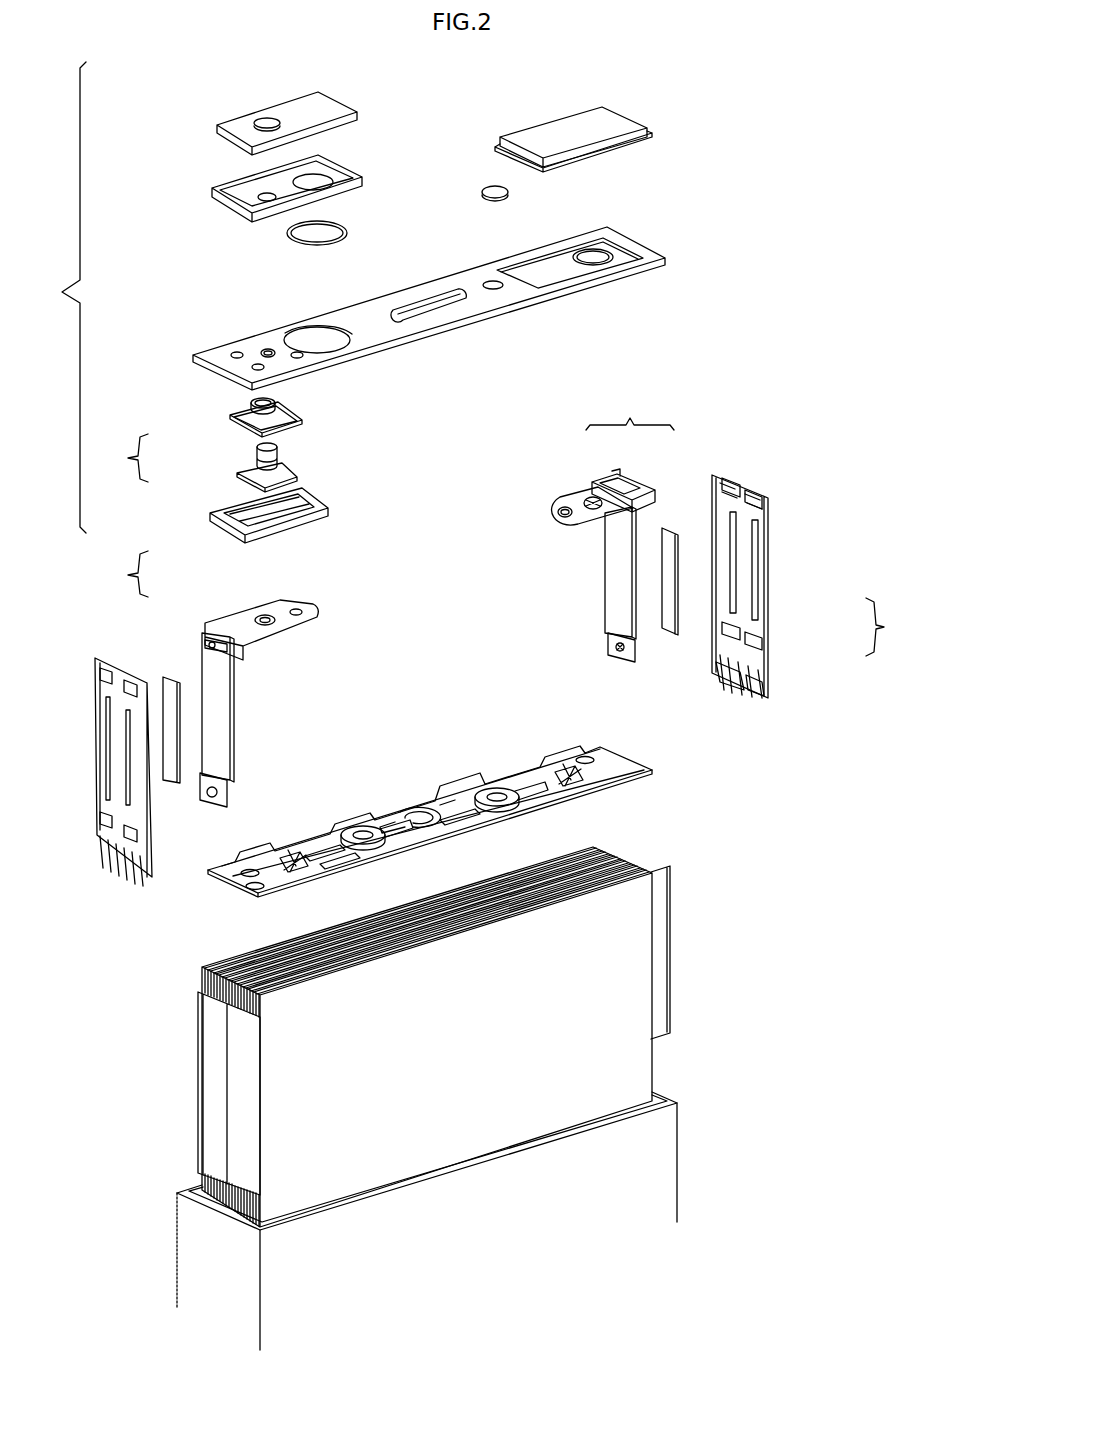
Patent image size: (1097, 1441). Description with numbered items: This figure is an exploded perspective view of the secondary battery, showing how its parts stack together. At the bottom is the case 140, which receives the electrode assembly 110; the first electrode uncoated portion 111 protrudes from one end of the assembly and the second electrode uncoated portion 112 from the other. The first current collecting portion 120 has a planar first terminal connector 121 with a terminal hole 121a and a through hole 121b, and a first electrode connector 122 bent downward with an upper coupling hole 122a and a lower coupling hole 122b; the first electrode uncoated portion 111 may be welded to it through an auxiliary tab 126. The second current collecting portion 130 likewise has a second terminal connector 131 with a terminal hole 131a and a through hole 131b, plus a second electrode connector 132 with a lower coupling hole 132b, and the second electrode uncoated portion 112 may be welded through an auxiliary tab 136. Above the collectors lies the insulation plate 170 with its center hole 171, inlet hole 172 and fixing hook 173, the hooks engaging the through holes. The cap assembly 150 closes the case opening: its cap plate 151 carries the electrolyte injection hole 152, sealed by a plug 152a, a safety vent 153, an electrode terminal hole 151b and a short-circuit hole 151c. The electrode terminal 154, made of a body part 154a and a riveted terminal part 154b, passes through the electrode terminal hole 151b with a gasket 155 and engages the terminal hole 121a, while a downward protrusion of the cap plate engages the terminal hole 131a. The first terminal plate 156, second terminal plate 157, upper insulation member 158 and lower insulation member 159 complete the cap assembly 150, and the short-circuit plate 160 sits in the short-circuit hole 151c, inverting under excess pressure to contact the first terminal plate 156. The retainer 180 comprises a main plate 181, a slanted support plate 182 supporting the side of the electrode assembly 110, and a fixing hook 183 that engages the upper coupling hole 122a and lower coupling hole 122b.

The electrode assembly 110 is at (436, 1013).
The first electrode uncoated portion 111 is at (207, 1090).
The second electrode uncoated portion 112 is at (667, 952).
The first current collecting portion 120 is at (222, 674).
The first terminal connector 121 is at (255, 615).
The terminal hole 121a is at (267, 625).
The through hole 121b is at (298, 609).
The first electrode connector 122 is at (226, 695).
The upper coupling hole 122a is at (228, 650).
The lower coupling hole 122b is at (213, 780).
The auxiliary tab 126 is at (170, 680).
The second current collecting portion 130 is at (566, 551).
The second terminal connector 131 is at (542, 507).
The terminal hole 131a is at (593, 512).
The through hole 131b is at (558, 505).
The second electrode connector 132 is at (636, 575).
The lower coupling hole 132b is at (612, 653).
The auxiliary tab 136 is at (670, 627).
The case 140 is at (675, 1168).
The cap assembly 150 is at (51, 297).
The cap plate 151 is at (428, 304).
The electrode terminal hole 151b is at (268, 350).
The short-circuit hole 151c is at (313, 327).
The electrolyte injection hole 152 is at (490, 280).
The plug 152a is at (490, 186).
The safety vent 153 is at (425, 300).
The electrode terminal 154 is at (190, 458).
The body part 154a is at (240, 475).
The terminal part 154b is at (258, 453).
The gasket 155 is at (240, 413).
The first terminal plate 156 is at (287, 110).
The second terminal plate 157 is at (557, 127).
The upper insulation member 158 is at (212, 192).
The lower insulation member 159 is at (210, 515).
The short-circuit plate 160 is at (287, 235).
The insulation plate 170 is at (471, 794).
The center hole 171 is at (413, 808).
The inlet hole 172 is at (363, 830).
The fixing hook 173 is at (293, 855).
The retainer 180 is at (460, 659).
The main plate 181 is at (770, 603).
The support plate 182 is at (772, 672).
The fixing hook 183 is at (747, 487).